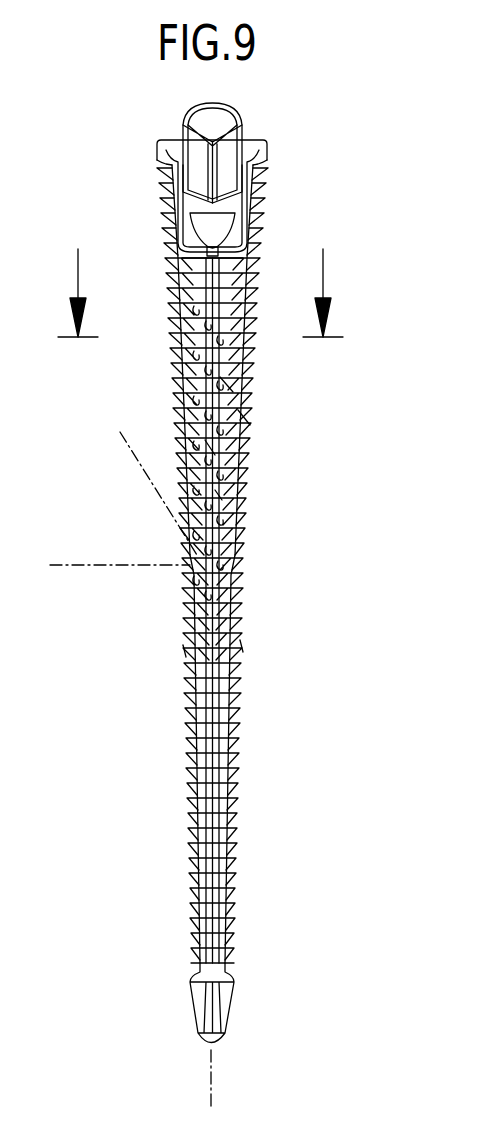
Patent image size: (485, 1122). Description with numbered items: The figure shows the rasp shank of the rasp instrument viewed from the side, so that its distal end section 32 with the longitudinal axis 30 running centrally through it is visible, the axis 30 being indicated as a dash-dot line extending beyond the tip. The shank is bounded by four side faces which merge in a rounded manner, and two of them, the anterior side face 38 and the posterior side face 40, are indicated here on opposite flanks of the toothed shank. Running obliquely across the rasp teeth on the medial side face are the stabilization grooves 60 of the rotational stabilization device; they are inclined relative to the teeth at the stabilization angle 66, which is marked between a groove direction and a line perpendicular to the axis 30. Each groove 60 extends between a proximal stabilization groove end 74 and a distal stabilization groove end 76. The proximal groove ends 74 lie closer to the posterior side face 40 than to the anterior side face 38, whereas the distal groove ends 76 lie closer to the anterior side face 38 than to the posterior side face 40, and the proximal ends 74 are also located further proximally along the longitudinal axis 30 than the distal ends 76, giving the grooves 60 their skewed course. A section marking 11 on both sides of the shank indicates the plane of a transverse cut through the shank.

The section line 11- 11 is at (201, 293).
The longitudinal axis 30 is at (218, 1078).
The distal end section 32 is at (255, 571).
The anterior side face 38 is at (240, 642).
The posterior side face 40 is at (177, 647).
The stabilization grooves 60 is at (215, 493).
The stabilization angle 66 is at (72, 565).
The proximal stabilization groove ends 74 is at (200, 323).
The distal stabilization groove ends 76 is at (220, 378).